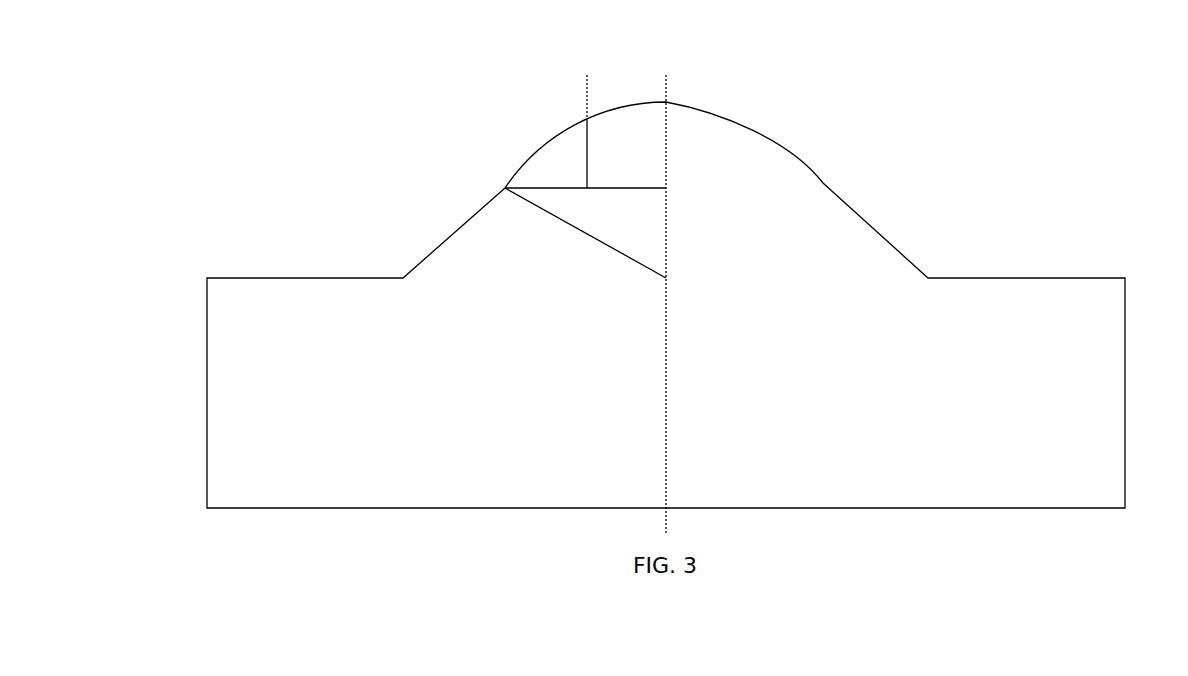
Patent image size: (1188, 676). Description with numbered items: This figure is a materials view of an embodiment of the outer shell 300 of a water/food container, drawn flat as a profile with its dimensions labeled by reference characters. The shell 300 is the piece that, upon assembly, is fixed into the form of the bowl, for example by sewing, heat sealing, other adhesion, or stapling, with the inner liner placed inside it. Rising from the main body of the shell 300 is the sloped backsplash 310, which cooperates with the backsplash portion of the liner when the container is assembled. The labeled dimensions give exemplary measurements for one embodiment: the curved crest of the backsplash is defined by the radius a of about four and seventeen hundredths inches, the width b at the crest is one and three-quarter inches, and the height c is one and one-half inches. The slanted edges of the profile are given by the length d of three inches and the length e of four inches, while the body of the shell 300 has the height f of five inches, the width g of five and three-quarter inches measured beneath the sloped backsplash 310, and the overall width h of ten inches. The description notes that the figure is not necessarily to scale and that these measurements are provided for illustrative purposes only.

The outer shell 300 is at (343, 93).
The sloped backsplash 310 is at (682, 174).
The radius dimension a is at (777, 133).
The dimension b is at (690, 82).
The dimension c is at (587, 120).
The dimension d is at (505, 188).
The dimension e is at (681, 252).
The dimension f is at (184, 278).
The dimension g is at (403, 278).
The dimension h is at (207, 508).